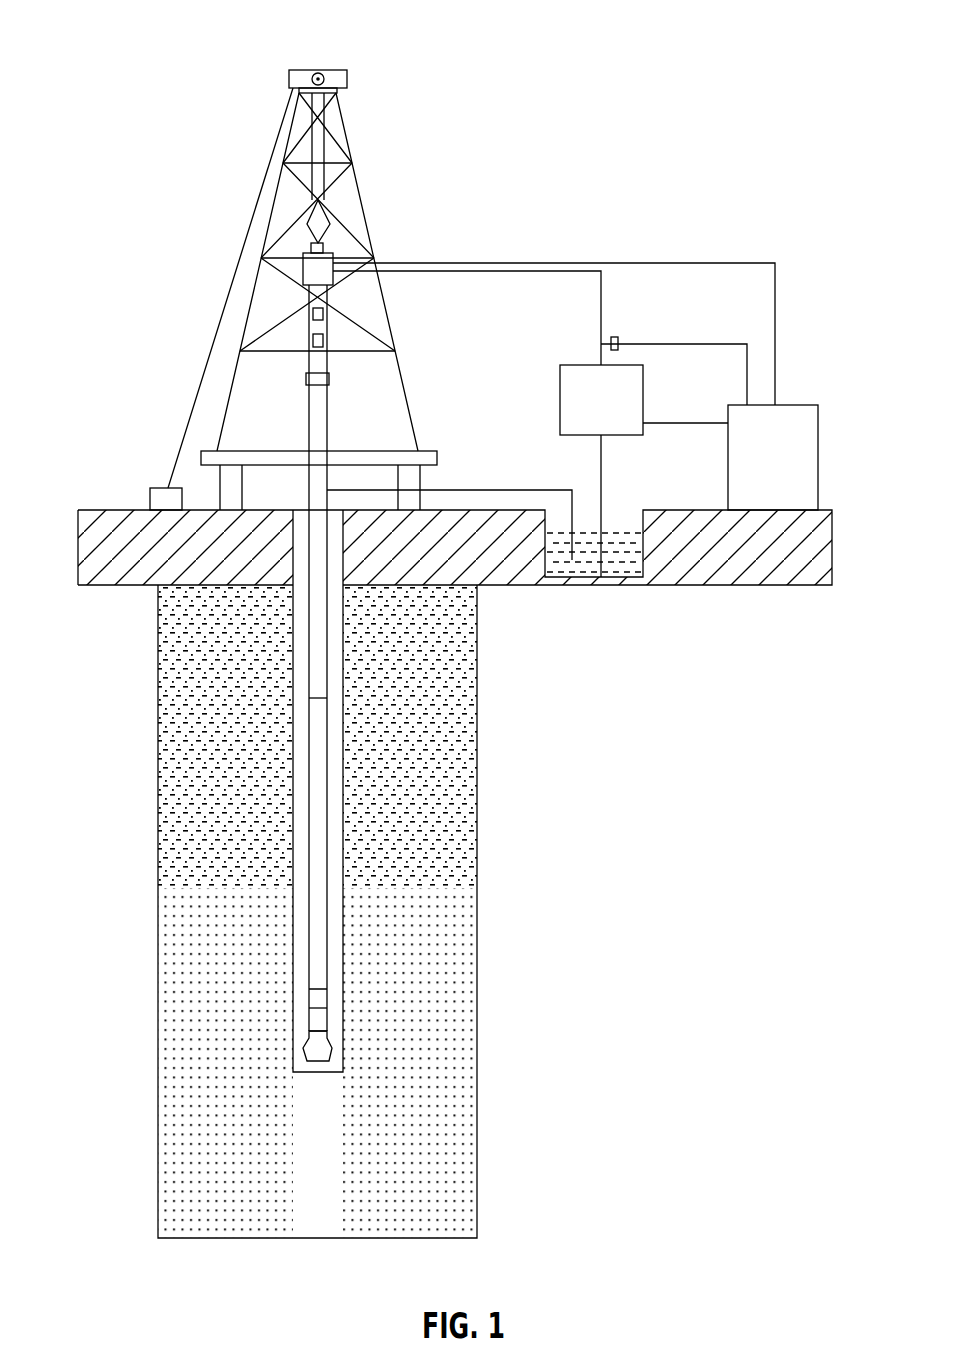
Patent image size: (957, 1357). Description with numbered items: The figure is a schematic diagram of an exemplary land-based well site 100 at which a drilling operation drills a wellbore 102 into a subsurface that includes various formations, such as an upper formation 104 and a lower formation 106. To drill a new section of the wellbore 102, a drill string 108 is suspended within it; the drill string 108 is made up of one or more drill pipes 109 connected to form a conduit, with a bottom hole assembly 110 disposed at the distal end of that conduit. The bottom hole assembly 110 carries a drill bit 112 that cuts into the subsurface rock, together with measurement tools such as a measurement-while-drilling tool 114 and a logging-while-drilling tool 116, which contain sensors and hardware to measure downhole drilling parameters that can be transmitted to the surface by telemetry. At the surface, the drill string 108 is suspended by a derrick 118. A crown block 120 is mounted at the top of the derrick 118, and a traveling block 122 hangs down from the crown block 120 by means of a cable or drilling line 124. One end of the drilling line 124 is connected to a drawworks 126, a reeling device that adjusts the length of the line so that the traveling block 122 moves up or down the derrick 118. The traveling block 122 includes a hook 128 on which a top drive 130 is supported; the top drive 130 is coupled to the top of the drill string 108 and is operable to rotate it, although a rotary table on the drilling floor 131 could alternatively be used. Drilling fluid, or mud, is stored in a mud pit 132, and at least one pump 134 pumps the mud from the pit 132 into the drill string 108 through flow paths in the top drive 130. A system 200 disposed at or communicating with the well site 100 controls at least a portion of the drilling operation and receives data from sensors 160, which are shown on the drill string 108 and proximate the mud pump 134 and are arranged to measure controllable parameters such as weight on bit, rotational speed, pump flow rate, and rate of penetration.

The well site 100 is at (396, 66).
The wellbore 102 is at (337, 698).
The formation 104 is at (478, 645).
The formation 106 is at (478, 925).
The drill string 108 is at (303, 878).
The drill pipe 109 is at (317, 690).
The bottom hole assembly 110 is at (342, 1026).
The drill bit 112 is at (322, 1057).
The measurement-while-drilling tool 114 is at (321, 998).
The logging-while-drilling tool 116 is at (321, 1021).
The derrick 118 is at (360, 188).
The crown block 120 is at (318, 72).
The traveling block 122 is at (318, 227).
The drilling line 124 is at (325, 148).
The drawworks 126 is at (158, 487).
The hook 128 is at (310, 243).
The top drive 130 is at (303, 270).
The drilling floor 131 is at (347, 448).
The mud pit 132 is at (640, 523).
The pump 134 is at (635, 388).
The sensor 160 is at (323, 315).
The system 200 is at (803, 403).